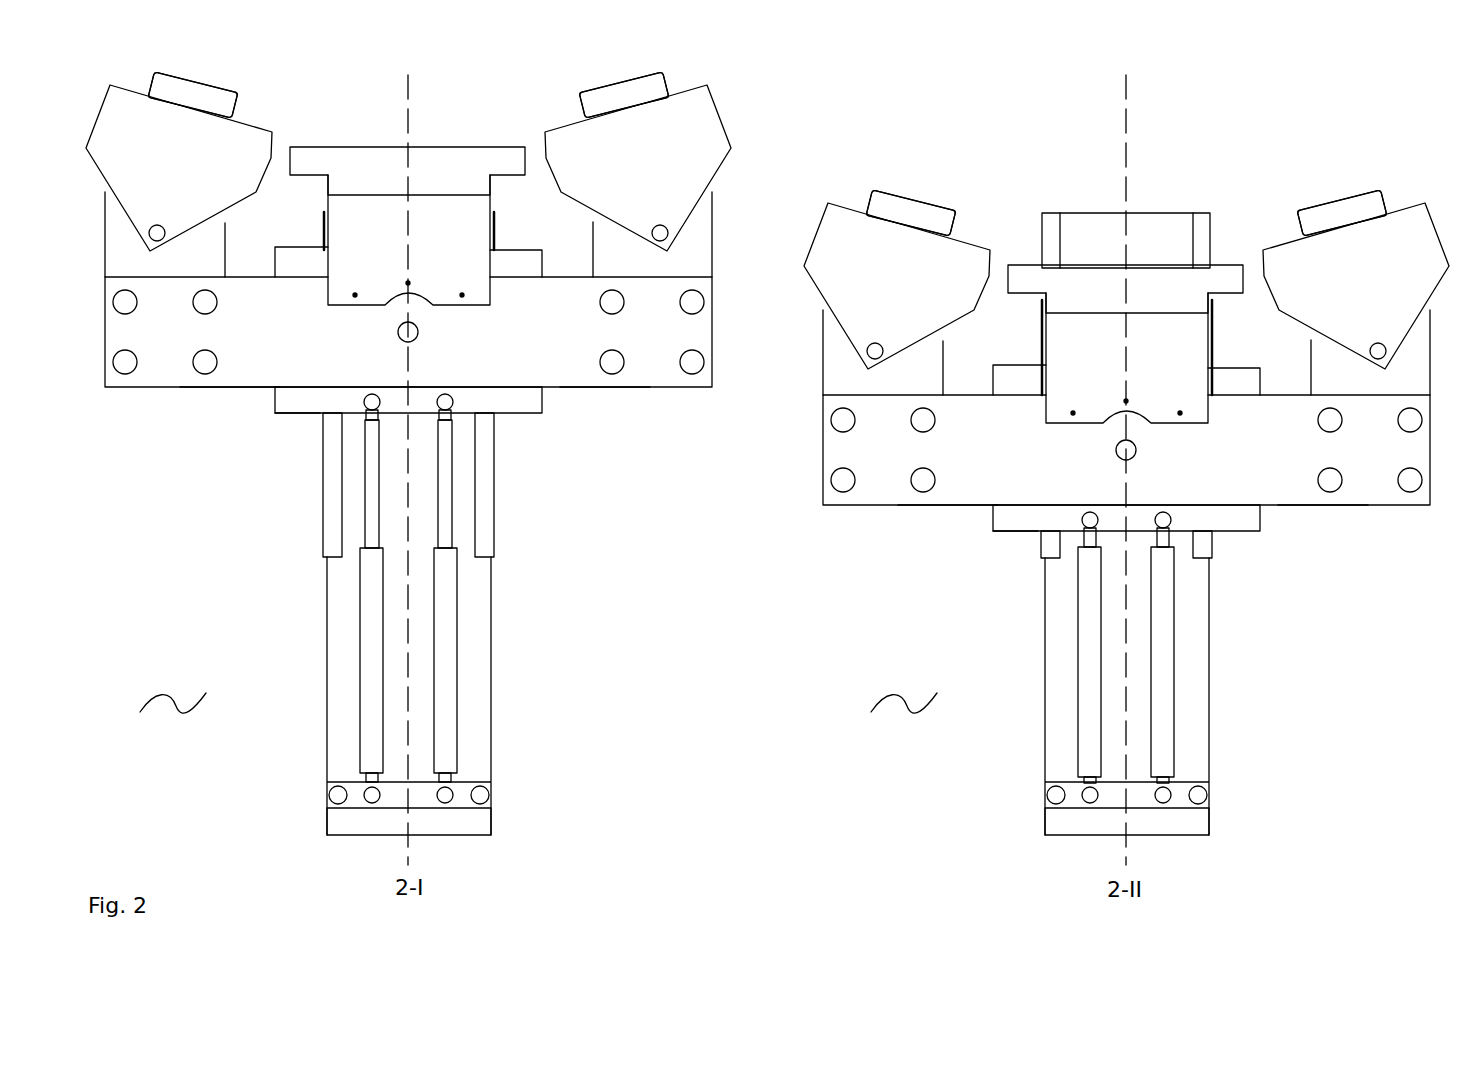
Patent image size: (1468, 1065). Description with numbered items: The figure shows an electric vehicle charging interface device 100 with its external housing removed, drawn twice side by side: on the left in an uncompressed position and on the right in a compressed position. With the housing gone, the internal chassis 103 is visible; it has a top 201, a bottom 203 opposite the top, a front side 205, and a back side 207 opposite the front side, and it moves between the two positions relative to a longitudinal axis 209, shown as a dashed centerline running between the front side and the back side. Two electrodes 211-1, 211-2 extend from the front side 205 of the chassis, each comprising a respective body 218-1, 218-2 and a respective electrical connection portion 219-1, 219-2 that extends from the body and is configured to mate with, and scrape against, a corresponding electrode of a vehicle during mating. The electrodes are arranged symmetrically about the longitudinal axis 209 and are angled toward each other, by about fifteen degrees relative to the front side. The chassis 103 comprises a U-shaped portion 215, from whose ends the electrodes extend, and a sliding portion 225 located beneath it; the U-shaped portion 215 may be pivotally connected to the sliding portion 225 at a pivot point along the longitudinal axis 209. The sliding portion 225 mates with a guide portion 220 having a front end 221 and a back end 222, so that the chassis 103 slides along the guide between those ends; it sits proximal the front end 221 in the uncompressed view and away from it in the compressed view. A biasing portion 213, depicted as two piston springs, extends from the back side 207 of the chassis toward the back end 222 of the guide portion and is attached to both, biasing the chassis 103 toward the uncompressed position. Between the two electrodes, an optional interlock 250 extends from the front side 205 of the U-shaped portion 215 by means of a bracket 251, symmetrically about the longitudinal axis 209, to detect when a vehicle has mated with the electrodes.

The electric vehicle charging interface device 100 is at (522, 717).
The chassis 103 is at (230, 393).
The top 201 is at (660, 378).
The bottom 203 is at (606, 402).
The front side 205 is at (290, 236).
The back side 207 is at (291, 424).
The longitudinal axis 209 is at (415, 90).
The electrode 211-1 is at (222, 84).
The electrode 211-2 is at (590, 86).
The biasing portion 213 is at (460, 655).
The U-shaped portion 215 is at (305, 366).
The body 218-1 is at (206, 189).
The body 218-2 is at (664, 189).
The electrical connection portion 219-1 is at (218, 105).
The electrical connection portion 219-2 is at (658, 105).
The guide portion 220 is at (338, 743).
The front end 221 is at (493, 211).
The back end 222 is at (345, 848).
The sliding portion 225 is at (328, 413).
The interlock 250 is at (394, 184).
The bracket 251 is at (394, 251).